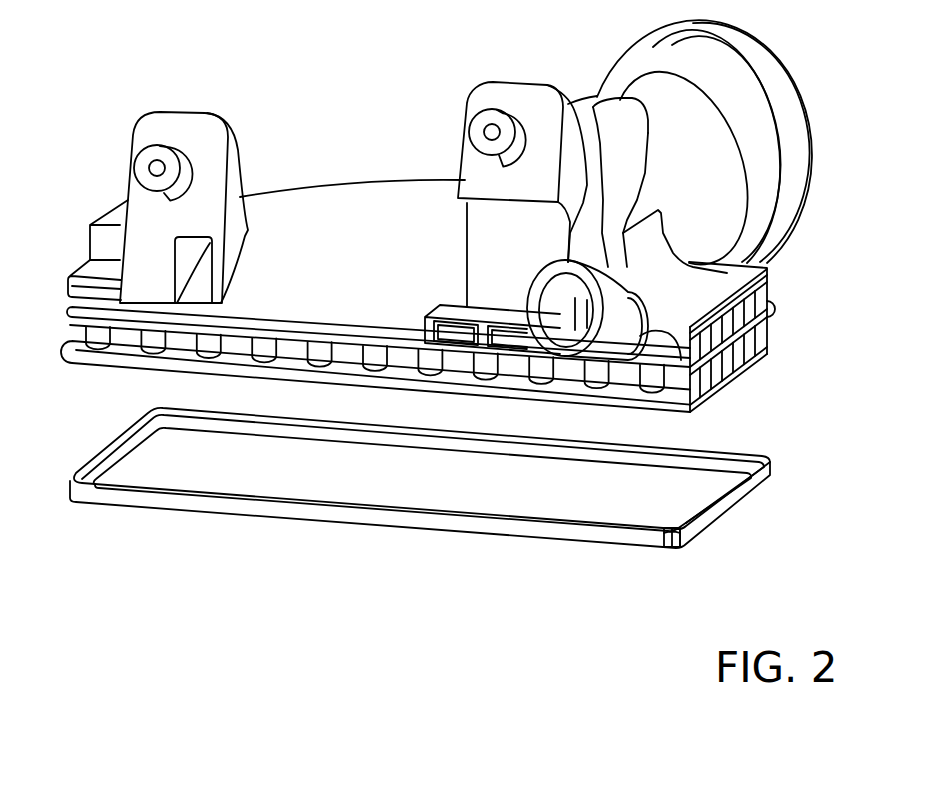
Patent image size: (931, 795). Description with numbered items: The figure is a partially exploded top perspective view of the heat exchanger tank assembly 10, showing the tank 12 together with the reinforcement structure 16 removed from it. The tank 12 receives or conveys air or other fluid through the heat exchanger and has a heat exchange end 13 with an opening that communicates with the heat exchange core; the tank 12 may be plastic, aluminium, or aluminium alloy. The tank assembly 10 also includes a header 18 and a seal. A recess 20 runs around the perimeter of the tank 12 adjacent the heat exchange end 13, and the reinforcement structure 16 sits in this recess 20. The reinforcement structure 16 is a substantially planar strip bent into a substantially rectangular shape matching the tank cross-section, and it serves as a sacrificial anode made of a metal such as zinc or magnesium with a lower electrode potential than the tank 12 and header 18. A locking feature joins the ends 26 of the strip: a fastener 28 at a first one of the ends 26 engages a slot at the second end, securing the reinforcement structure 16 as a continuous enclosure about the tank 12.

The tank assembly 10 is at (110, 45).
The tank 12 is at (327, 203).
The heat exchange end 13 is at (683, 414).
The reinforcement structure 16 is at (130, 499).
The header 18 is at (96, 374).
The recess 20 is at (772, 320).
The ends 26 is at (658, 558).
The fastener 28 is at (677, 548).